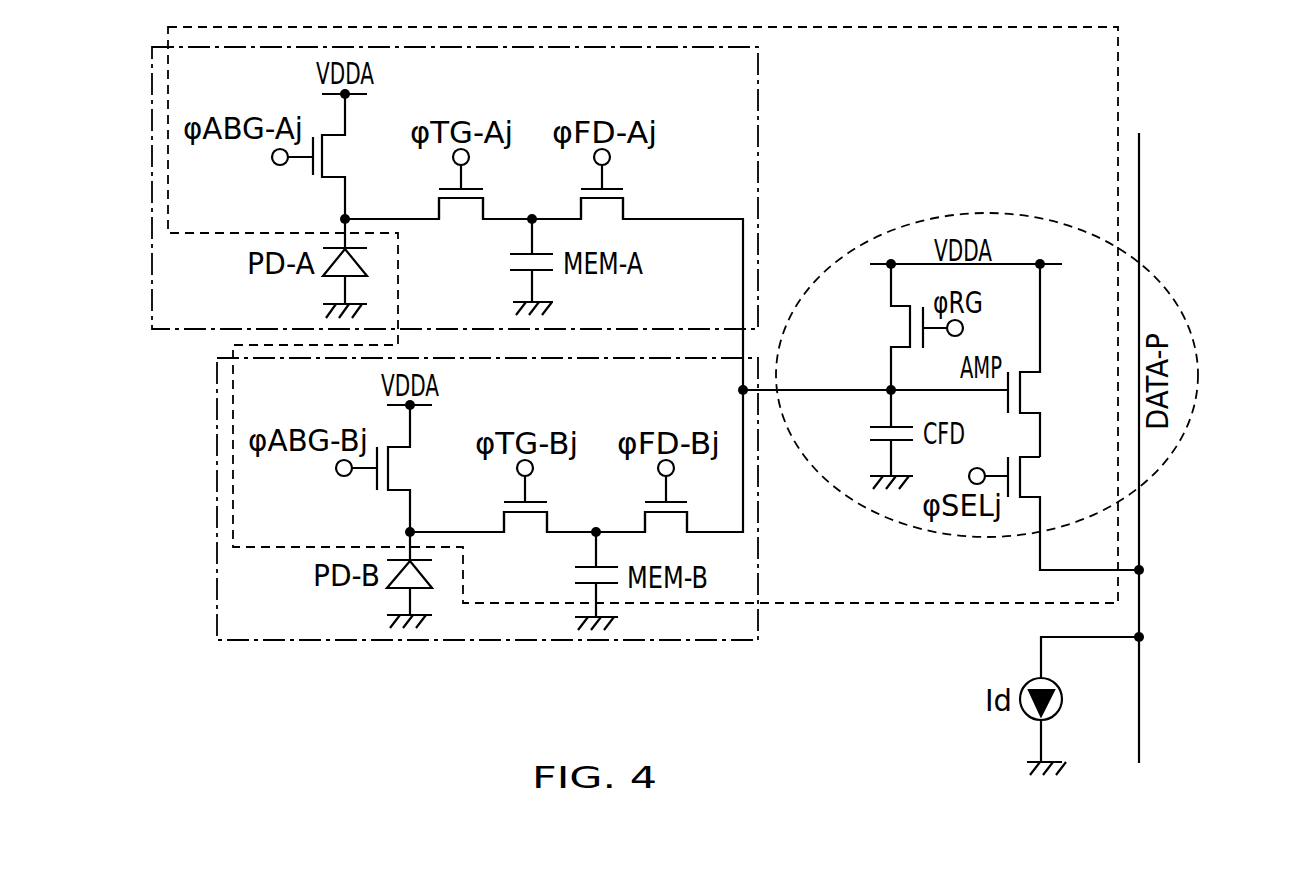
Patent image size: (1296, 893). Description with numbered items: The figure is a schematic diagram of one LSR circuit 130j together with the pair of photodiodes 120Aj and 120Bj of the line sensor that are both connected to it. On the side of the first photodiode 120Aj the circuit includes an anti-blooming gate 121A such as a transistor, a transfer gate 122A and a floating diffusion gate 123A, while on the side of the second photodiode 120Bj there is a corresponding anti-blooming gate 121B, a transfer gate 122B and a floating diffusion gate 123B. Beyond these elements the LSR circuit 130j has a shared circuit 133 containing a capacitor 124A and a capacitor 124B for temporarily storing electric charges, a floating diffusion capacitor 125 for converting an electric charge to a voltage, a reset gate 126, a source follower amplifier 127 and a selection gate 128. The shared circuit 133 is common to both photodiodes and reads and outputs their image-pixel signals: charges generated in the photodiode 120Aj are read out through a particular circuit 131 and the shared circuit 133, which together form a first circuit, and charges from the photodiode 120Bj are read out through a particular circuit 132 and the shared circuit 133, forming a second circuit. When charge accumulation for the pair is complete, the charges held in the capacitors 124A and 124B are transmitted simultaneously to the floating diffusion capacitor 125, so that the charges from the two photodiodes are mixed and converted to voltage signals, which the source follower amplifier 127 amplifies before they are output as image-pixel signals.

The LSR circuit 130j is at (1118, 77).
The particular circuit 131 is at (152, 190).
The particular circuit 132 is at (217, 490).
The shared circuit 133 is at (1198, 380).
The photodiode 120Aj is at (337, 277).
The anti-blooming gate 121A is at (312, 170).
The transfer gate 122A is at (440, 187).
The floating diffusion gate 123A is at (588, 184).
The capacitor 124A is at (522, 270).
The photodiode 120Bj is at (398, 590).
The anti-blooming gate transistor B 121B is at (377, 482).
The transfer gate 122B is at (515, 499).
The floating diffusion gate 123B is at (655, 499).
The capacitor 124B is at (587, 565).
The floating diffusion capacitor 125 is at (883, 423).
The reset gate 126 is at (935, 343).
The source follower amplifier 127 is at (1023, 412).
The selection gate 128 is at (1023, 457).